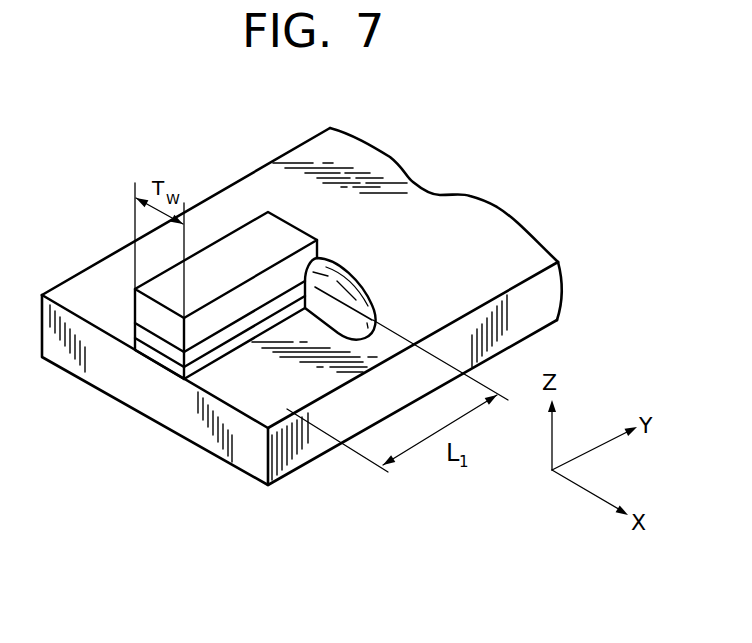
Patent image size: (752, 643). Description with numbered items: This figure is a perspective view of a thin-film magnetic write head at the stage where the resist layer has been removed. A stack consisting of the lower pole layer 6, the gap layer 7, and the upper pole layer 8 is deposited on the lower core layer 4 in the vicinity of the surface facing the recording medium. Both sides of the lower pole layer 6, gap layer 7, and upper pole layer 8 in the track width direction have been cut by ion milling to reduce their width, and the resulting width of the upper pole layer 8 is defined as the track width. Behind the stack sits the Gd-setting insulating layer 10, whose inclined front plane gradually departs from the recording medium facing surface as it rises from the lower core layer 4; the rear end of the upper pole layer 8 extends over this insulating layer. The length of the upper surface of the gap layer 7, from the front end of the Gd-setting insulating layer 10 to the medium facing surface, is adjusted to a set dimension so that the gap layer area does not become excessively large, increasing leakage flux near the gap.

The lower core layer 4 is at (532, 302).
The lower pole layer 6 is at (172, 365).
The gap layer 7 is at (160, 342).
The upper pole layer 8 is at (145, 307).
The Gd-setting insulating layer 10 is at (333, 283).